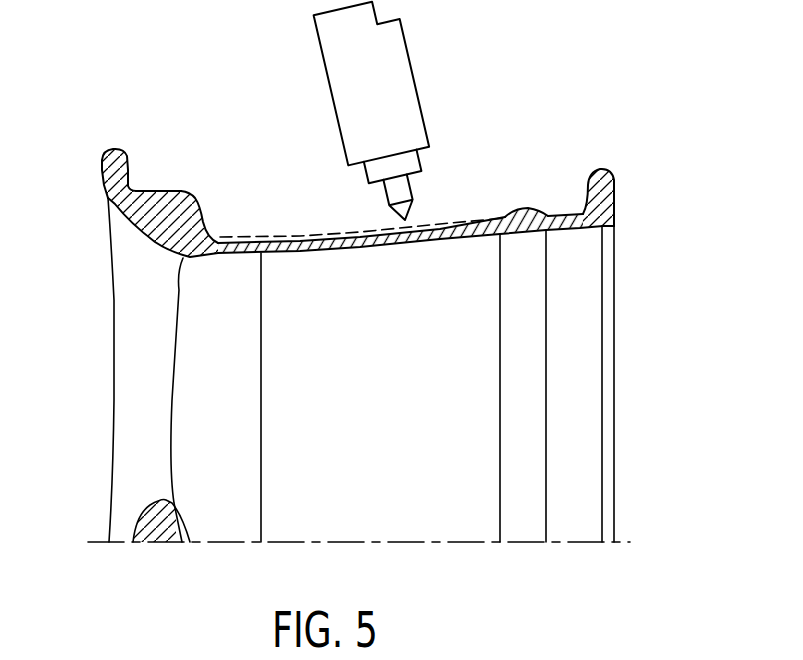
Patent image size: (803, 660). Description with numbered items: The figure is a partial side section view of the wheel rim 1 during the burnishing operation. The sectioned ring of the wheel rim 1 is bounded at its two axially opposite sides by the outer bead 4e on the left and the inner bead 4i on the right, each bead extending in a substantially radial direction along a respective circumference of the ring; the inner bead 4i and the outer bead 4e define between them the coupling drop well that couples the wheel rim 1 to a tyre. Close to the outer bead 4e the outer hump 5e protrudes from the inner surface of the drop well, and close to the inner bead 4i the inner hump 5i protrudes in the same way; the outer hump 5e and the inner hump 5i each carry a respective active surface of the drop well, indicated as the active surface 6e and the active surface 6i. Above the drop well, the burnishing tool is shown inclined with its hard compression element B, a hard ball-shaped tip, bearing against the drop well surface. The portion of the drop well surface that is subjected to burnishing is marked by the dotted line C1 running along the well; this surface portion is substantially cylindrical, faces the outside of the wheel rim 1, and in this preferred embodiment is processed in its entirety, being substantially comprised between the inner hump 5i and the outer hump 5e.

The wheel rim 1 is at (94, 342).
The outer bead 4e is at (101, 159).
The active surface of the outer hump 6e is at (144, 191).
The outer hump 5e is at (194, 189).
The dotted line C1 is at (294, 229).
The hard compression element B is at (419, 209).
The inner hump 5i is at (506, 201).
The active surface of the inner hump 6i is at (558, 213).
The inner bead 4i is at (603, 170).